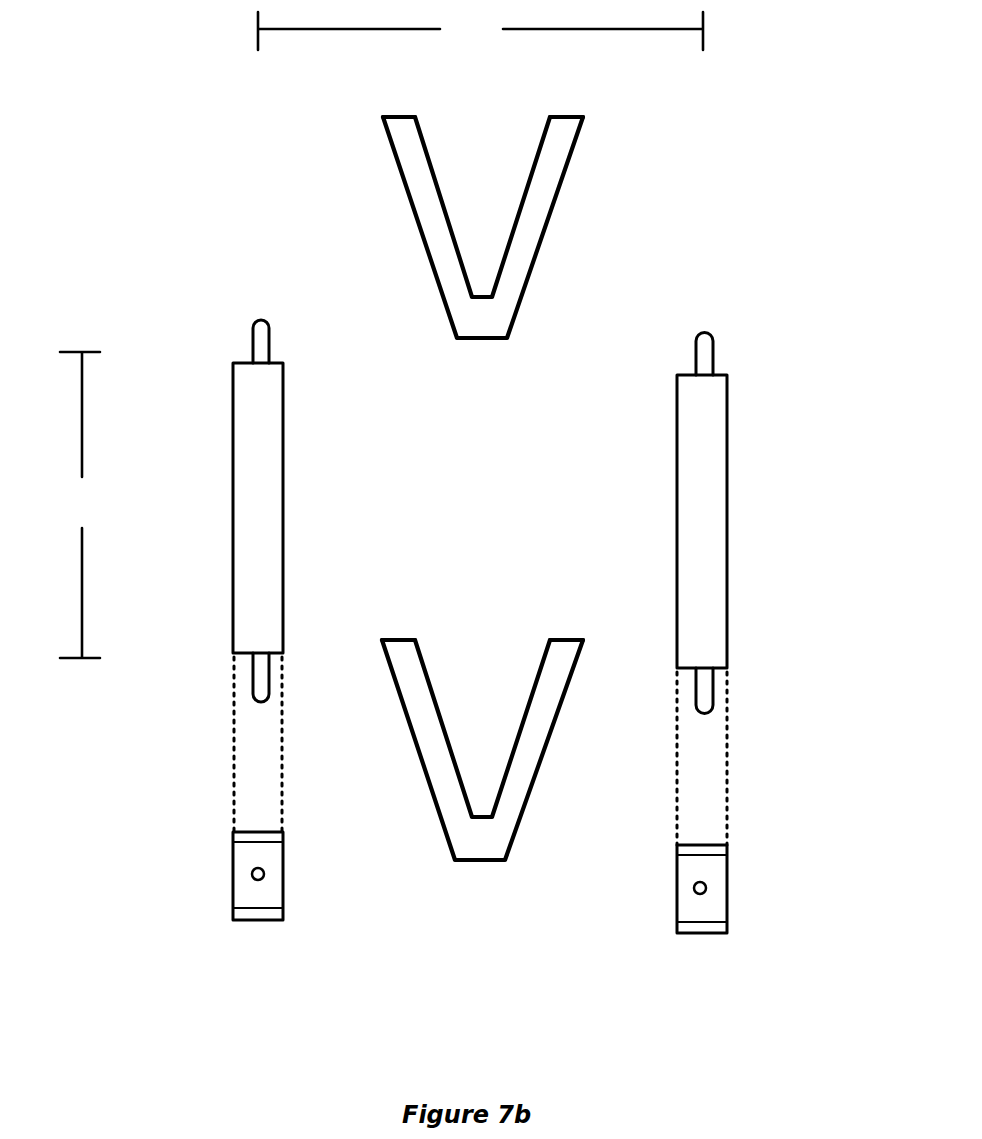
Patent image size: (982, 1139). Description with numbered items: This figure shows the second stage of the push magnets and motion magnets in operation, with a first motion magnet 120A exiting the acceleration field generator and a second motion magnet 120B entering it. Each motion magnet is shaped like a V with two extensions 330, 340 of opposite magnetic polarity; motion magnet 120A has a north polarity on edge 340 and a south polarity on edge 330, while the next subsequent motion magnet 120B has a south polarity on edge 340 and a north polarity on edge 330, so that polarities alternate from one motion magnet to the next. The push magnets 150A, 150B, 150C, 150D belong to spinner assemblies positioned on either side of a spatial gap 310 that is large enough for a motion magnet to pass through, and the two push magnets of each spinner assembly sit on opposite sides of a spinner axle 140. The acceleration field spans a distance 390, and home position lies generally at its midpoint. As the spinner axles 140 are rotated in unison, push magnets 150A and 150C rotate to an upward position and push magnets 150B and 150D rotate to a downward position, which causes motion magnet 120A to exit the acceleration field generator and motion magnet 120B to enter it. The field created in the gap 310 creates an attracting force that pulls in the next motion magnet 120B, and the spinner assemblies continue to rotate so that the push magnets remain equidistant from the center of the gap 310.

The spatial gap 310 is at (480, 31).
The distance 390 is at (82, 505).
The motion magnet 120A is at (476, 329).
The motion magnet 120B is at (463, 848).
The extension 330 is at (395, 126).
The extension 340 is at (563, 128).
The push magnet 150A is at (250, 375).
The push magnet 150B is at (265, 915).
The push magnet 150C is at (717, 388).
The push magnet 150D is at (706, 928).
The spinner axle 140 is at (263, 872).